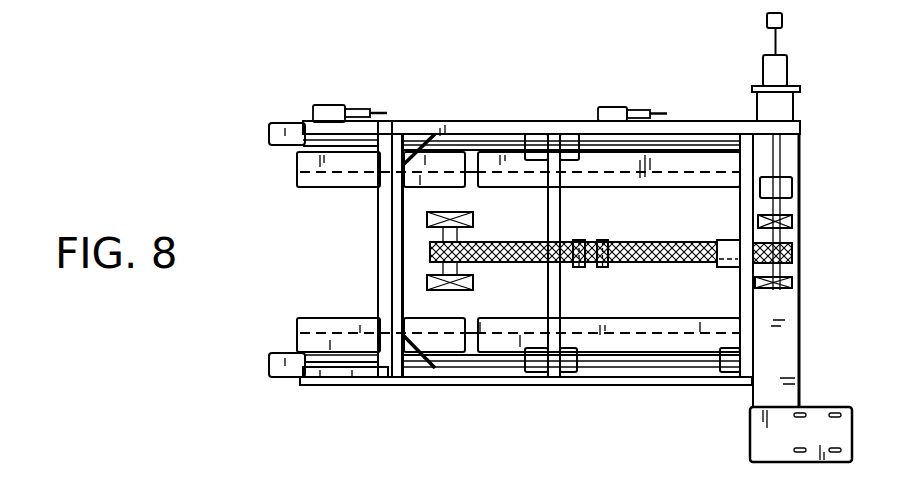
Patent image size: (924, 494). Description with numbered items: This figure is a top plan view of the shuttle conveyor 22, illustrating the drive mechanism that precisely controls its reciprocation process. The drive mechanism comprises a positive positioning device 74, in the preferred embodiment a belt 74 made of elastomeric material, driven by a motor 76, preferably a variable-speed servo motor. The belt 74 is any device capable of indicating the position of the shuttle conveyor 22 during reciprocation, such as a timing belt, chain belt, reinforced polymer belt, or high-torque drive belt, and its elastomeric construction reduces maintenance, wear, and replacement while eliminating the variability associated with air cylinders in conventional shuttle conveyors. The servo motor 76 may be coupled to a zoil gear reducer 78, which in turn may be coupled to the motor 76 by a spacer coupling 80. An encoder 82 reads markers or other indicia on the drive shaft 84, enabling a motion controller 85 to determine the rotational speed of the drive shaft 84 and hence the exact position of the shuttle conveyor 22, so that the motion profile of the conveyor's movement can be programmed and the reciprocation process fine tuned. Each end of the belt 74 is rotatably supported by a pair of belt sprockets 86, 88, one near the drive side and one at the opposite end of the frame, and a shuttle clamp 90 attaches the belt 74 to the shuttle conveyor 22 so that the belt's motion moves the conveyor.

The shuttle conveyor 22 is at (267, 93).
The positive positioning device 74 is at (680, 243).
The motor 76 is at (762, 70).
The zoil gear reducer 78 is at (795, 100).
The spacer coupling 80 is at (803, 147).
The encoder 82 is at (795, 192).
The drive shaft 84 is at (782, 204).
The motion controller 85 is at (780, 29).
The belt sprocket 86 is at (782, 268).
The belt sprocket 88 is at (443, 231).
The shuttle clamp 90 is at (585, 270).